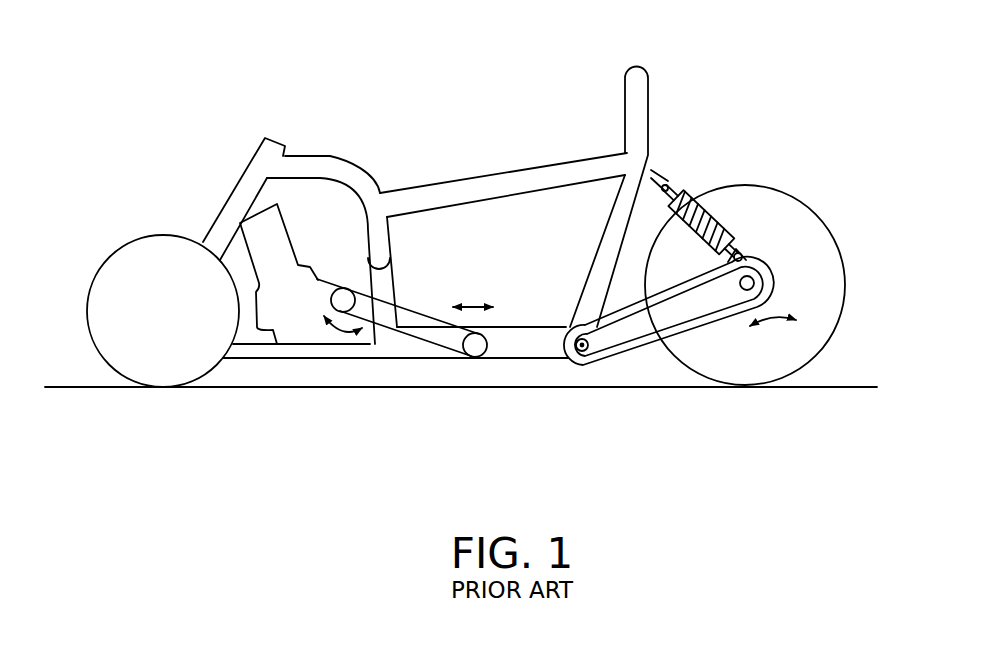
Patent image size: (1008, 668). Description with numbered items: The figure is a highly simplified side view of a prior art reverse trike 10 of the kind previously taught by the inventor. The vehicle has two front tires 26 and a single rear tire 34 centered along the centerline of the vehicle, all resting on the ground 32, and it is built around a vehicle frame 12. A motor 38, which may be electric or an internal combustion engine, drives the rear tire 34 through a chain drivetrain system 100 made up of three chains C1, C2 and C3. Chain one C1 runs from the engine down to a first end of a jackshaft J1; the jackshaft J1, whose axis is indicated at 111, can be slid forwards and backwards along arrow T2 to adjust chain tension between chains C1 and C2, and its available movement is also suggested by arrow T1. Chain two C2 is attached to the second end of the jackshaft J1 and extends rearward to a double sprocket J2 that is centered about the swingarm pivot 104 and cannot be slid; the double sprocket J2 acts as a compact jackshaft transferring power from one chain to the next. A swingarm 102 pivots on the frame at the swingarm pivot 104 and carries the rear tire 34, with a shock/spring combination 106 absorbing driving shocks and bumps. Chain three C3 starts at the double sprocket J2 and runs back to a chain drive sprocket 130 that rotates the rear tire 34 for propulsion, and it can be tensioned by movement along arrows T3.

The reverse trike 10 is at (431, 66).
The vehicle frame 12 is at (487, 175).
The front tires 26 is at (107, 256).
The ground 32 is at (73, 387).
The rear tire 34 is at (843, 250).
The motor 38 is at (258, 223).
The chain drivetrain system 100 is at (572, 290).
The swingarm 102 is at (647, 345).
The swingarm pivot 104 is at (640, 412).
The shock/spring combination 106 is at (705, 210).
The pivot point of coupler C1 111 is at (343, 300).
The chain drive sprocket 130 is at (760, 268).
The chain one C1 is at (383, 327).
The chain two C2 is at (507, 360).
The chain three C3 is at (732, 324).
The jackshaft J1 is at (468, 353).
The double sprocket J2 is at (585, 355).
The travel direction T1 is at (332, 330).
The arrow T2 is at (472, 305).
The arrows T3 is at (797, 323).